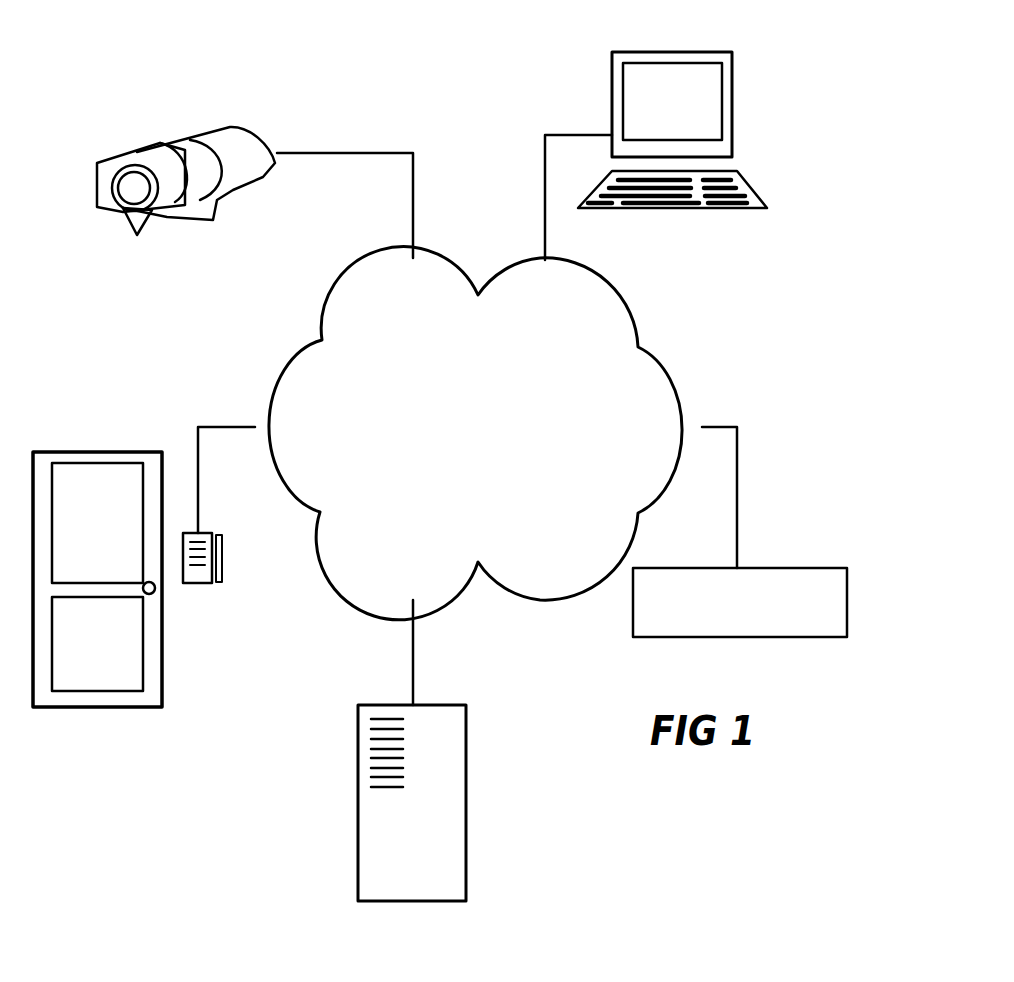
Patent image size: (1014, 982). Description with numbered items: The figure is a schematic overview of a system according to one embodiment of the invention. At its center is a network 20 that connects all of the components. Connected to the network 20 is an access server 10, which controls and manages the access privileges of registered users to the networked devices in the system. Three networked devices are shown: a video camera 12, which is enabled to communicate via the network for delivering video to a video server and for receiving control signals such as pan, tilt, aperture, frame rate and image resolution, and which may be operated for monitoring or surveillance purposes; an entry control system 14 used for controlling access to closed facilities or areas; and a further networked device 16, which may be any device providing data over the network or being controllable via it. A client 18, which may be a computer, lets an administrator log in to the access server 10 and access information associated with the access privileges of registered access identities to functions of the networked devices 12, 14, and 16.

The access server 10 is at (453, 822).
The video camera 12 is at (249, 150).
The entry control system 14 is at (225, 575).
The networked device 16 is at (837, 580).
The client 18 is at (695, 82).
The network 20 is at (605, 310).